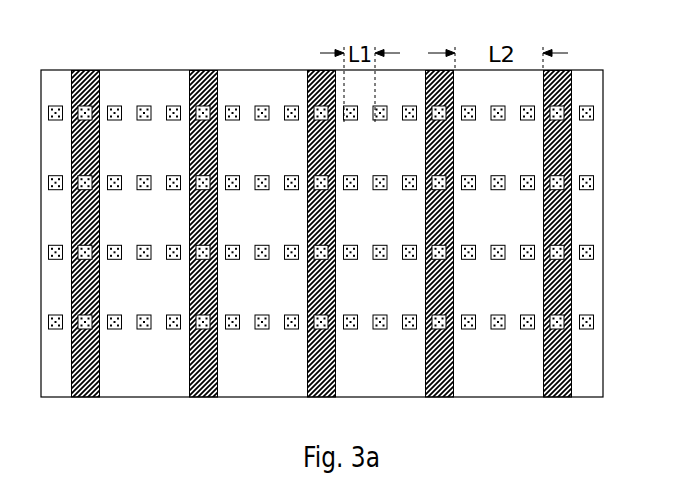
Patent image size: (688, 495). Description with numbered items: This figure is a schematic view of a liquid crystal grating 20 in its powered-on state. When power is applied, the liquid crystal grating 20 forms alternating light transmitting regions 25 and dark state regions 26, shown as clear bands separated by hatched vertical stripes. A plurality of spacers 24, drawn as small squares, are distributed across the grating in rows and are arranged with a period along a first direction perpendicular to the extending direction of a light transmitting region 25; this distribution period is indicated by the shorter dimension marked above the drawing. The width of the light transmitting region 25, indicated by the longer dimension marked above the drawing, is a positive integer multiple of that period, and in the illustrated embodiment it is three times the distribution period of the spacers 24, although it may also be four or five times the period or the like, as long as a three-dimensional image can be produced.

The liquid crystal grating 20 is at (85, 33).
The spacer 24 is at (120, 106).
The light transmitting region 25 is at (157, 99).
The dark state region 26 is at (198, 74).